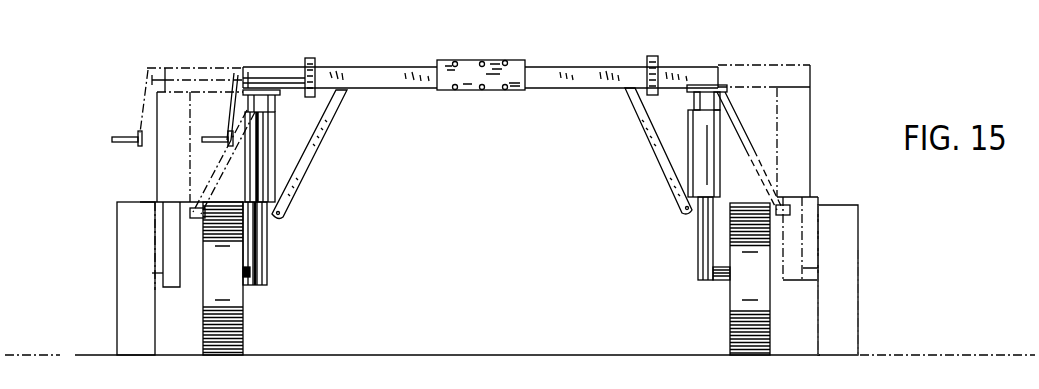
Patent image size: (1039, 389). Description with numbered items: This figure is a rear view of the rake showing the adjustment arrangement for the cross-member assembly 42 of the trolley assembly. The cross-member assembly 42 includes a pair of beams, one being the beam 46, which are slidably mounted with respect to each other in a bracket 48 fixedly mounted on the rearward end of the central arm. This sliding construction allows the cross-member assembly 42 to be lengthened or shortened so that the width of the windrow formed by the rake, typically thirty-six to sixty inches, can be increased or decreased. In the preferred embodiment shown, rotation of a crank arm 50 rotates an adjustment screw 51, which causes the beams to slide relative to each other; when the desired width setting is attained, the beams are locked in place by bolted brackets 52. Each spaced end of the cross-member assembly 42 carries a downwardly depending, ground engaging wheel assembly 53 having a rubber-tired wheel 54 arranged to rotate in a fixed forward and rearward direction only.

The cross-member assembly 42 is at (512, 50).
The beam 46 is at (428, 72).
The bracket 48 is at (492, 82).
The crank arm 50 is at (236, 101).
The adjustment screw 51 is at (272, 78).
The bolted brackets 52 is at (313, 60).
The ground engaging wheel assembly 53 is at (277, 226).
The rubber-tired wheel 54 is at (243, 320).